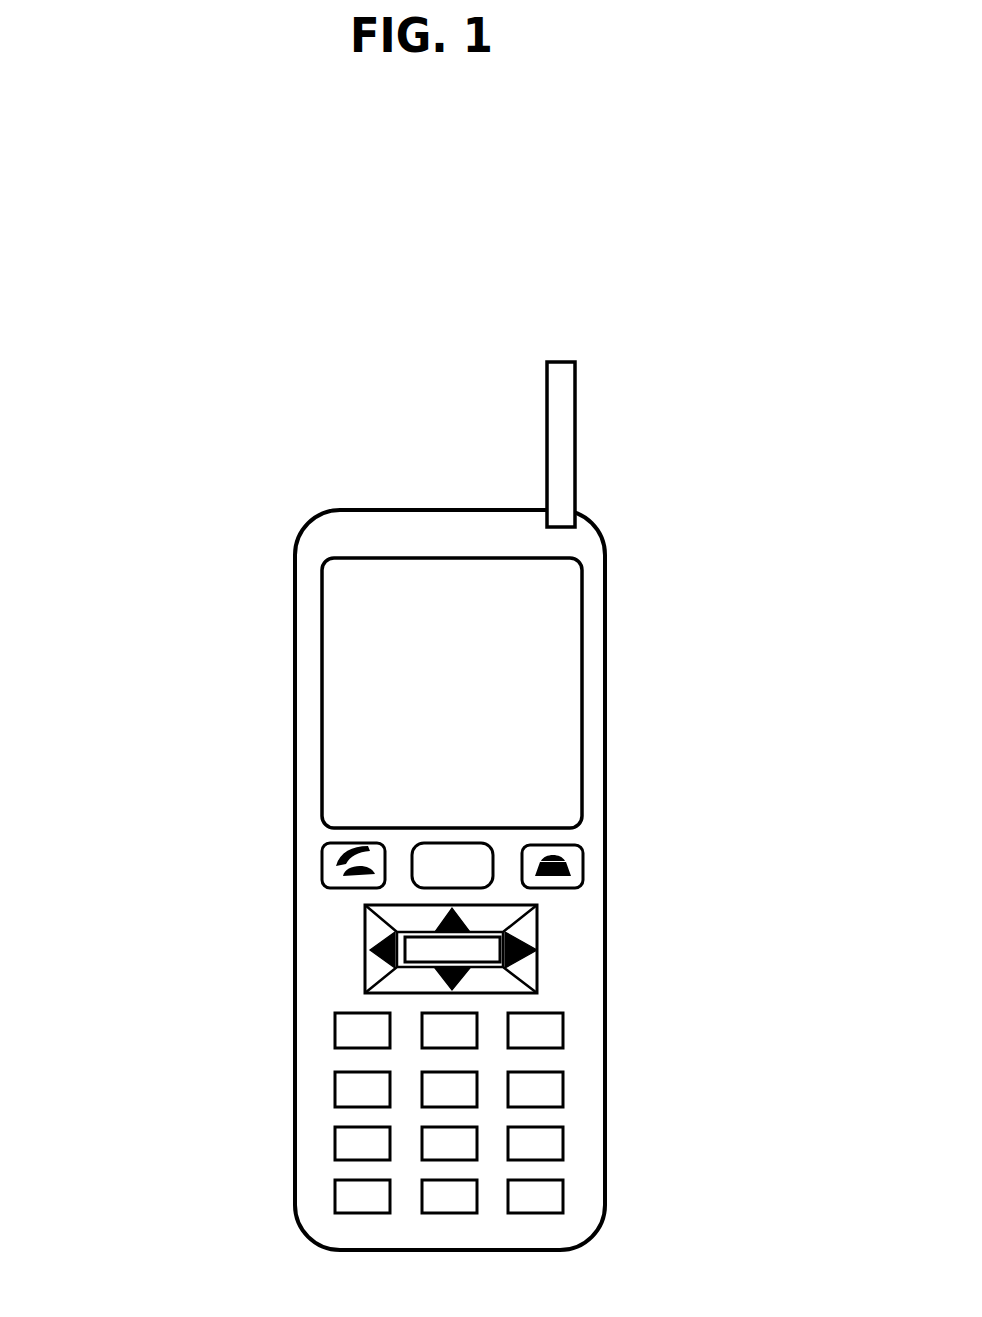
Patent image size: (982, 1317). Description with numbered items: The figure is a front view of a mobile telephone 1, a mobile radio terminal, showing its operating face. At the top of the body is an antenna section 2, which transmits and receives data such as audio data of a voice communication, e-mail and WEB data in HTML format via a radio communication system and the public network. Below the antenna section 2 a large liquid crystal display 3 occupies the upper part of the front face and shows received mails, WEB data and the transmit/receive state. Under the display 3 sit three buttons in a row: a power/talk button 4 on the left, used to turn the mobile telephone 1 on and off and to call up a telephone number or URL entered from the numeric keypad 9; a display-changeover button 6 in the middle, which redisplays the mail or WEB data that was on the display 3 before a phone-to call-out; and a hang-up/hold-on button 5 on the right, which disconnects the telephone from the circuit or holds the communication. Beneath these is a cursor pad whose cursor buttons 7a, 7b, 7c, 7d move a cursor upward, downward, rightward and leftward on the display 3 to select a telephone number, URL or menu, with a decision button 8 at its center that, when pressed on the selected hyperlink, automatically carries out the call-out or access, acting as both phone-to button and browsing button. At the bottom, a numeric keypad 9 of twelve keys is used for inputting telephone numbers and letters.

The mobile telephone 1 is at (453, 510).
The antenna section 2 is at (575, 443).
The liquid crystal display 3 is at (582, 692).
The power/talk button 4 is at (322, 868).
The hang-up/hold-on button 5 is at (583, 866).
The display-changeover button 6 is at (453, 843).
The cursor button 7a is at (455, 912).
The cursor button 7b is at (537, 948).
The cursor button 7c is at (455, 993).
The cursor button 7d is at (365, 946).
The decision button 8 is at (503, 935).
The numeric keypad 9 is at (568, 1213).